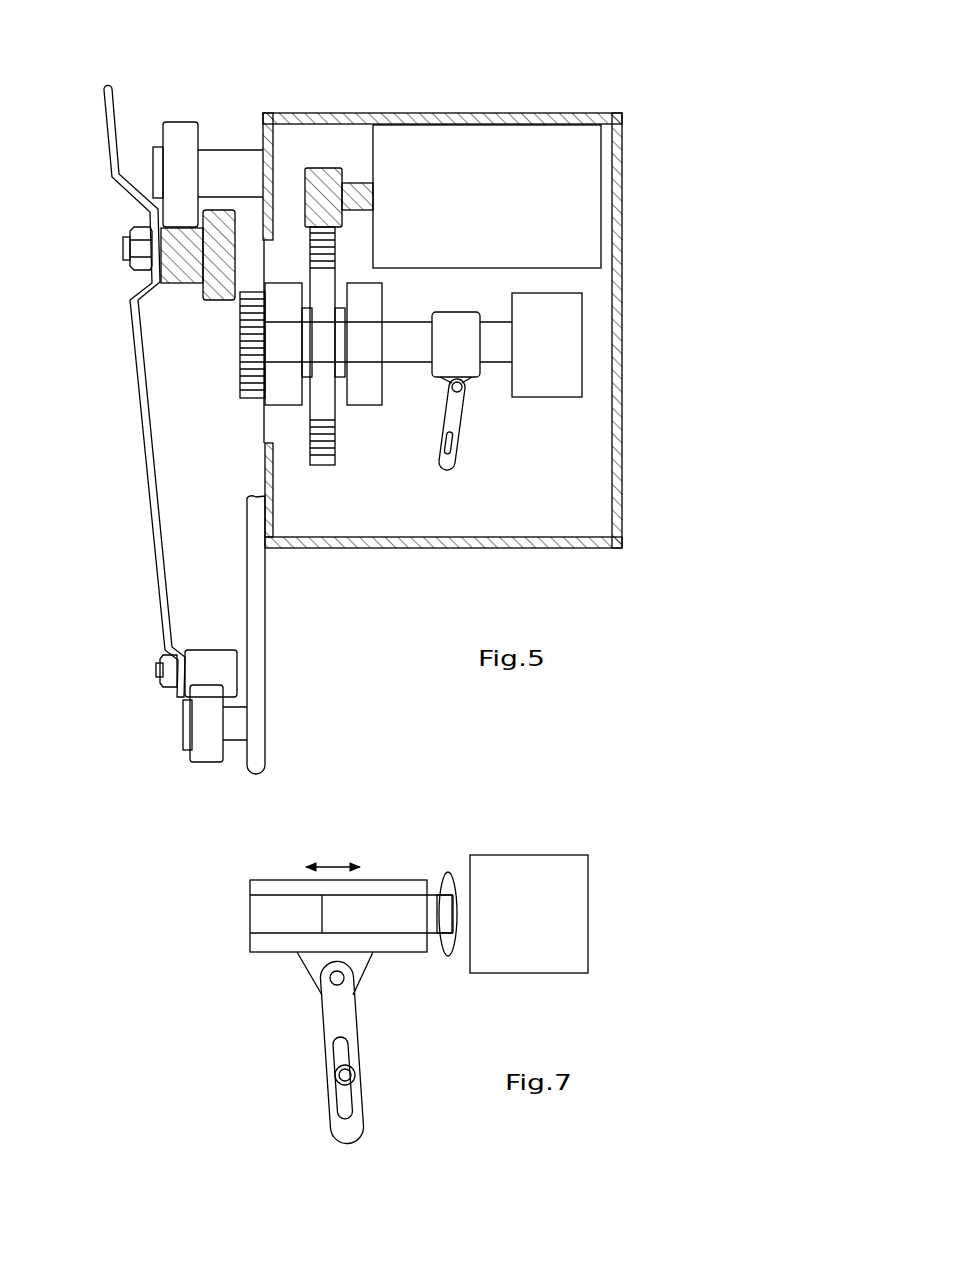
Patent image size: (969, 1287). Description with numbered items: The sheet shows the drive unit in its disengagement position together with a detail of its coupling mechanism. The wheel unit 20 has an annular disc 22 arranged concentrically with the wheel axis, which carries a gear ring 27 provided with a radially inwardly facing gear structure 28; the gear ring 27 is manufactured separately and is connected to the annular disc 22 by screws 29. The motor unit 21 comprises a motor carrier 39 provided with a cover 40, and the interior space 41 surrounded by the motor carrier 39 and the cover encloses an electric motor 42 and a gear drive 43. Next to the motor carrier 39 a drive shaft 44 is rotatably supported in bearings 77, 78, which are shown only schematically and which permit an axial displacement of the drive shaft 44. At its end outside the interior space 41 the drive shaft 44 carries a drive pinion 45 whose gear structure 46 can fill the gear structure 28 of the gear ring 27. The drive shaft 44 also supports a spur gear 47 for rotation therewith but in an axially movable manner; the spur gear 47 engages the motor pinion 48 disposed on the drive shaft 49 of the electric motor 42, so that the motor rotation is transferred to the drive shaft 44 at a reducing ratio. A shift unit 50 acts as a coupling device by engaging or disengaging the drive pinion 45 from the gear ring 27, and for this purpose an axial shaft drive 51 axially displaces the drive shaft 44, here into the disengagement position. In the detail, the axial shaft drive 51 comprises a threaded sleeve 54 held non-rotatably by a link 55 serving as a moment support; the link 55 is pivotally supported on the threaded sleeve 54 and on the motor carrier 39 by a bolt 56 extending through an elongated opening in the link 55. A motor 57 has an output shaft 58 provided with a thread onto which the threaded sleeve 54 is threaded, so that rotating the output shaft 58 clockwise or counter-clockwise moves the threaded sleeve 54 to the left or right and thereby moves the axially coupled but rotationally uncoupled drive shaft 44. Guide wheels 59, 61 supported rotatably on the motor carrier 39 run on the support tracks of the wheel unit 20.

In FIG. 5, the wheel unit 20 is at (154, 427).
In FIG. 5, the motor unit 21 is at (419, 88).
In FIG. 5, the annular disc 22 is at (145, 448).
In FIG. 5, the gear ring 27 is at (199, 293).
In FIG. 5, the gear structure 28 is at (228, 303).
In FIG. 5, the screws 29 is at (118, 274).
In FIG. 5, the motor carrier 39 is at (275, 490).
In FIG. 5, the cover 40 is at (342, 550).
In FIG. 5, the interior space 41 is at (455, 510).
In FIG. 5, the electric motor 42 is at (500, 226).
In FIG. 5, the gear drive 43 is at (369, 422).
In FIG. 5, the drive shaft 44 is at (402, 364).
In FIG. 5, the drive pinion 45 is at (241, 401).
In FIG. 5, the gear structure 46 is at (250, 291).
In FIG. 5, the spur gear 47 is at (318, 466).
In FIG. 5, the motor pinion 48 is at (300, 180).
In FIG. 5, the drive shaft of the electric motor 49 is at (349, 192).
In FIG. 5, the shift unit 50 is at (492, 404).
In FIG. 5, the axial shaft drive 51 is at (548, 402).
In FIG. 7, the axial shaft drive 51 is at (521, 841).
In FIG. 7, the threaded sleeve 54 is at (370, 890).
In FIG. 7, the link 55 is at (342, 1018).
In FIG. 7, the bolt 56 is at (357, 1072).
In FIG. 7, the motor 57 is at (545, 927).
In FIG. 7, the output shaft 58 is at (439, 896).
In FIG. 5, the guide wheel 59 is at (193, 104).
In FIG. 5, the guide wheel 61 is at (205, 774).
In FIG. 5, the bearing 77 is at (283, 283).
In FIG. 5, the bearing 78 is at (382, 292).